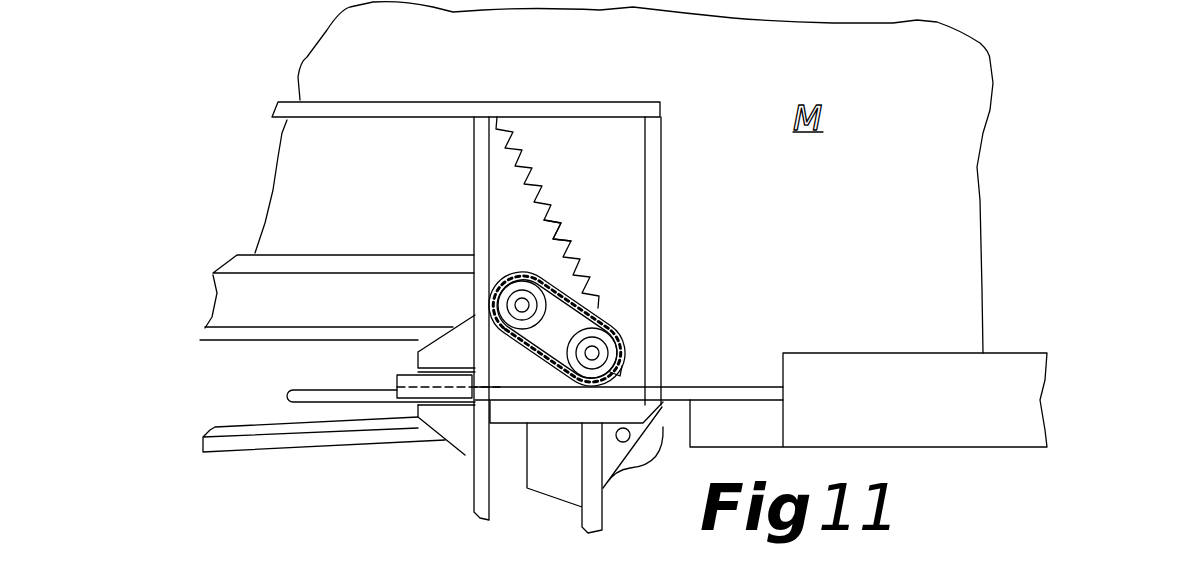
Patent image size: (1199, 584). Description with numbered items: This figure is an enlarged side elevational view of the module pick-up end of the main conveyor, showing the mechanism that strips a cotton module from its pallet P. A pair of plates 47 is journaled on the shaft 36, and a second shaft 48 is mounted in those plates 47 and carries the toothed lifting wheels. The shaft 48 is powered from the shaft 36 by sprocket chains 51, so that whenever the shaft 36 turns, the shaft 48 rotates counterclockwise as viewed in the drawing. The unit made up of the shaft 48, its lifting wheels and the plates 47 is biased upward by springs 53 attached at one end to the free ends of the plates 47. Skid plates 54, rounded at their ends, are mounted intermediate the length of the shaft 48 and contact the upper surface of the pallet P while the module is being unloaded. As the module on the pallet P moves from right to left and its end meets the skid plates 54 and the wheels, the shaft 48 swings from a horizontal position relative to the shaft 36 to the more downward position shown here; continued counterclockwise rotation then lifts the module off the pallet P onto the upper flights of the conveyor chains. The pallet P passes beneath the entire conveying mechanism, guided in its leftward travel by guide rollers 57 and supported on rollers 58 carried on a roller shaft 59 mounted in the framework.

The shaft 36 is at (522, 305).
The plates 47 is at (624, 368).
The shaft 48 is at (592, 350).
The sprocket chains 51 is at (556, 223).
The springs 53 is at (530, 170).
The skid plates 54 is at (530, 355).
The guide rollers 57 is at (397, 378).
The rollers 58 is at (642, 457).
The pivot pin 59 is at (623, 442).
The pallet P is at (707, 388).